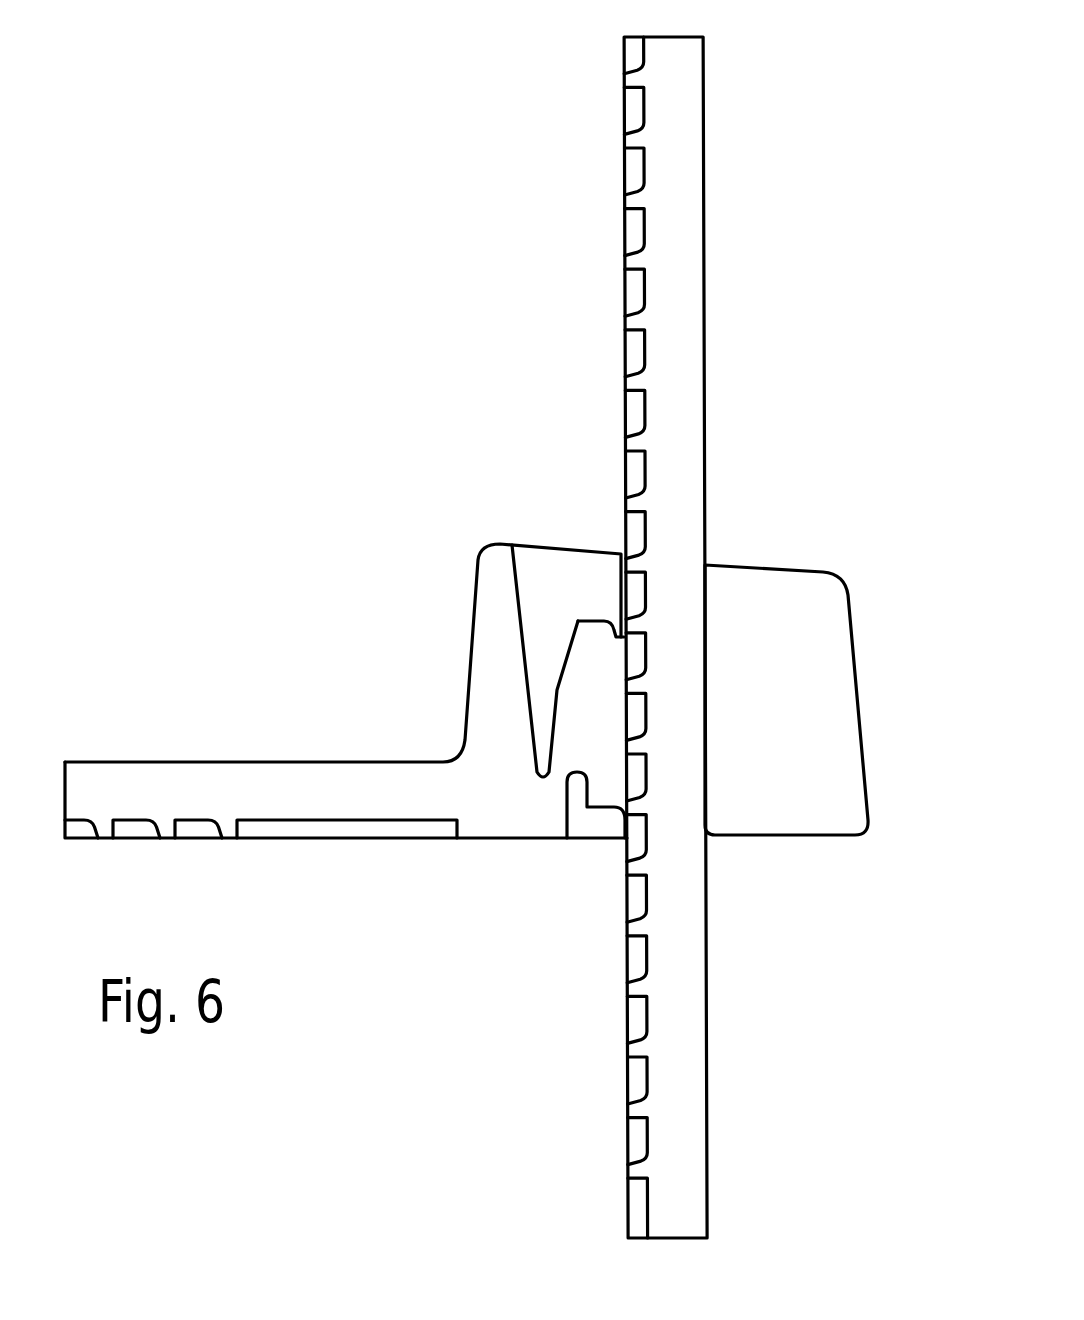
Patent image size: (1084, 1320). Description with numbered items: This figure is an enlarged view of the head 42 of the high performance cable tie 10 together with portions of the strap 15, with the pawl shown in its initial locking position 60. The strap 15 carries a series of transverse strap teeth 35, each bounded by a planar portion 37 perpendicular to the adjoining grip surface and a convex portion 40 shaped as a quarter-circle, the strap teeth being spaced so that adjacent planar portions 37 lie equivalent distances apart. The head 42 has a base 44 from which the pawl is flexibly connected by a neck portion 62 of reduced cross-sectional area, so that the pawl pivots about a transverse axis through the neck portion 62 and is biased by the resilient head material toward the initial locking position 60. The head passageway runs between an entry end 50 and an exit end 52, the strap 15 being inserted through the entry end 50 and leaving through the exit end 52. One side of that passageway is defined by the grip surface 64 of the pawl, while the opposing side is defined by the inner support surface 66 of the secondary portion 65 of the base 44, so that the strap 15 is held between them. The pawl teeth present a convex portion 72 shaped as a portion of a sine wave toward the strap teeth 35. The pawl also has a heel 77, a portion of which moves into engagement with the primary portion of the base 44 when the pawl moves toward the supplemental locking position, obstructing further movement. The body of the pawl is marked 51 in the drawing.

The strap 15 is at (606, 303).
The cable tie 10 is at (443, 695).
The head 42 is at (497, 526).
The initial locking position 60 is at (605, 598).
The convex portion 72 is at (652, 671).
The body 51 is at (605, 722).
The neck portion 62 is at (548, 784).
The grip surface 64 is at (648, 686).
The heel 77 is at (603, 797).
The base 44 is at (838, 563).
The exit end 52 is at (705, 565).
The inner support surface 66 is at (690, 674).
The secondary portion 65 is at (817, 776).
The entry end 50 is at (710, 840).
The convex portion 40 is at (630, 1025).
The strap teeth 35 is at (615, 1061).
The planar portion 37 is at (628, 1073).